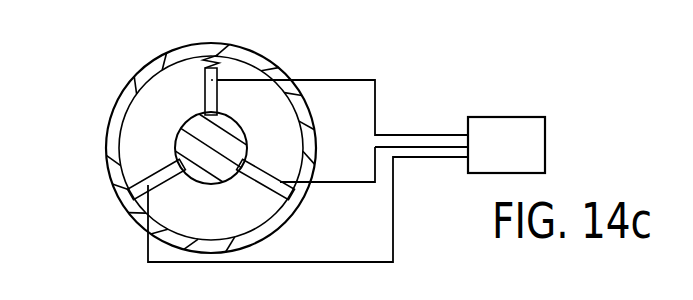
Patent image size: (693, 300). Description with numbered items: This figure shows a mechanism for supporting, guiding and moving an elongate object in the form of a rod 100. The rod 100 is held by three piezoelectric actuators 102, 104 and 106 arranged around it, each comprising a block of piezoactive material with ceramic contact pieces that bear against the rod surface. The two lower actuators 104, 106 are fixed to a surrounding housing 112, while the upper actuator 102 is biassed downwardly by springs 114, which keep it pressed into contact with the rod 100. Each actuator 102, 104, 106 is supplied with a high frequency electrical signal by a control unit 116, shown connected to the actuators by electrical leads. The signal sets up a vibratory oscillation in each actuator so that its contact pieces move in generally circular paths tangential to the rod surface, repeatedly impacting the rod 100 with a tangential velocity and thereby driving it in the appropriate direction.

The rod 100 is at (180, 134).
The upper piezoelectric actuator 102 is at (204, 86).
The lower piezoelectric actuator 104 is at (146, 180).
The lower piezoelectric actuator 106 is at (282, 186).
The housing 112 is at (130, 80).
The springs 114 is at (212, 64).
The control unit 116 is at (545, 126).